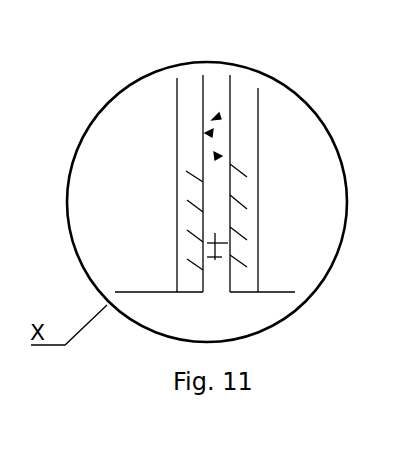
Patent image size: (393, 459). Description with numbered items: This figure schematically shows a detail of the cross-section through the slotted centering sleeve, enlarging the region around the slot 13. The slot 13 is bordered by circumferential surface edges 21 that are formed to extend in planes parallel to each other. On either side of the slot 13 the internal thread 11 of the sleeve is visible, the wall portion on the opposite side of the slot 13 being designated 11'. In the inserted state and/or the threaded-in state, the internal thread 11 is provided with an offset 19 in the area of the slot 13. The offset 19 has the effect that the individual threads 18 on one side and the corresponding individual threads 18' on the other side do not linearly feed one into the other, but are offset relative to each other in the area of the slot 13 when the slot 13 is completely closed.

The internal thread 11 is at (109, 183).
The wall 11' is at (302, 183).
The slot 13 is at (214, 118).
The threads 18 is at (275, 214).
The rib 18' is at (153, 220).
The offset 19 is at (228, 243).
The circumferential surface edges 21 is at (207, 133).